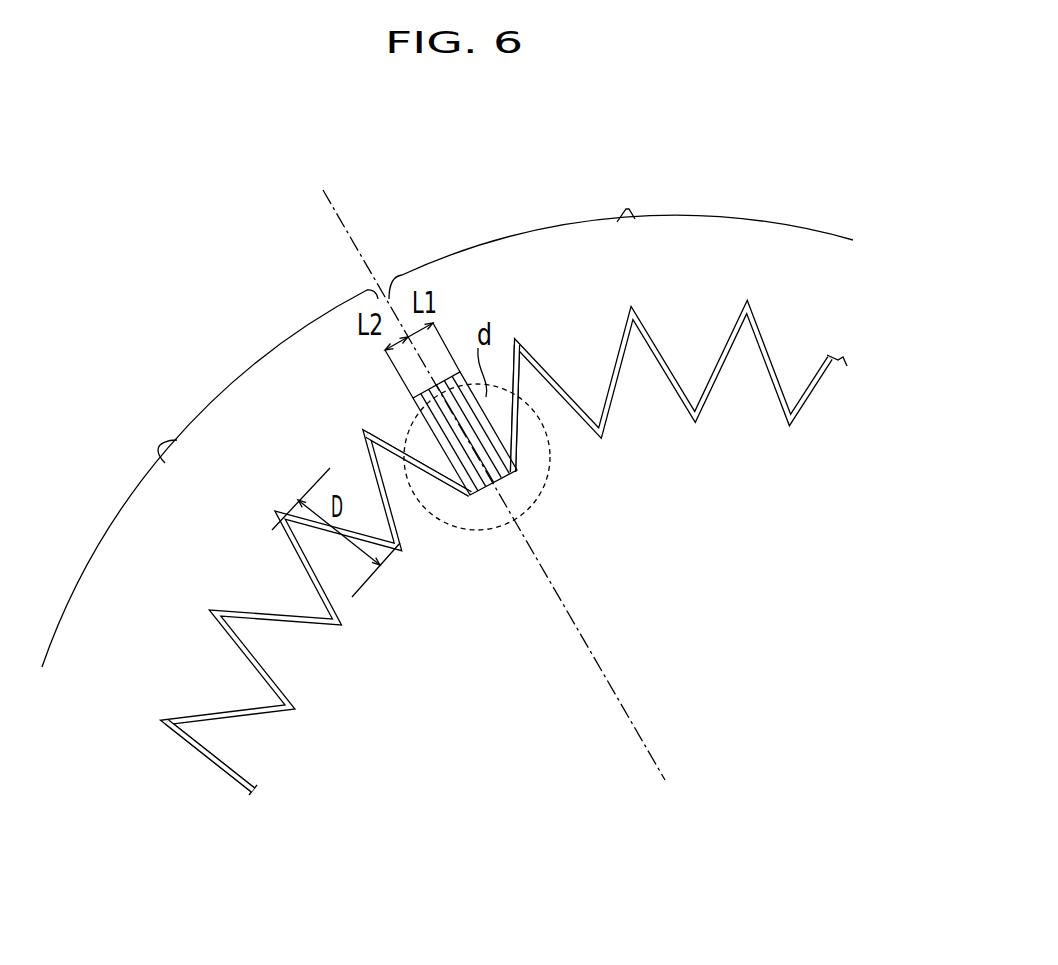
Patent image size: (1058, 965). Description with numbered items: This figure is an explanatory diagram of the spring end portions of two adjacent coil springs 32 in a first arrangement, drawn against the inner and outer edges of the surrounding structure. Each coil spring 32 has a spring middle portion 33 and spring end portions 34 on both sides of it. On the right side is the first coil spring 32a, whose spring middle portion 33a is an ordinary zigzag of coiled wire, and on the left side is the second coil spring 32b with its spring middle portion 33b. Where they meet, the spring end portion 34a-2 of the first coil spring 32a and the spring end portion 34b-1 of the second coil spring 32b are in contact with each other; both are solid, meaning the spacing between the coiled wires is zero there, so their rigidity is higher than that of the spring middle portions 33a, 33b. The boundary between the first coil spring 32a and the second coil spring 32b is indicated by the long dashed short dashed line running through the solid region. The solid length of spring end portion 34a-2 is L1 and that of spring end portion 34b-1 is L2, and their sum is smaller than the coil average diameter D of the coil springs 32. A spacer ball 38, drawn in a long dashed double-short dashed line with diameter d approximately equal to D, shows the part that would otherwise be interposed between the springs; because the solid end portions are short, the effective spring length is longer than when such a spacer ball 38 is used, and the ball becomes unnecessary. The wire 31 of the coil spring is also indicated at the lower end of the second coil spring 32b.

The coil wire 31 is at (205, 758).
The coil spring 32 is at (447, 405).
The first coil spring 32a is at (621, 236).
The second coil spring 32b is at (210, 478).
The spring middle portion 33 is at (507, 551).
The spring middle portion of the first coil spring 33a is at (717, 390).
The spring middle portion of the second coil spring 33b is at (307, 630).
The spring end portion 34 is at (515, 495).
The spring end portion of the first coil spring 34a-2 is at (503, 482).
The spring end portion of the second coil spring 34b-1 is at (482, 495).
The spacer ball 38 is at (412, 427).